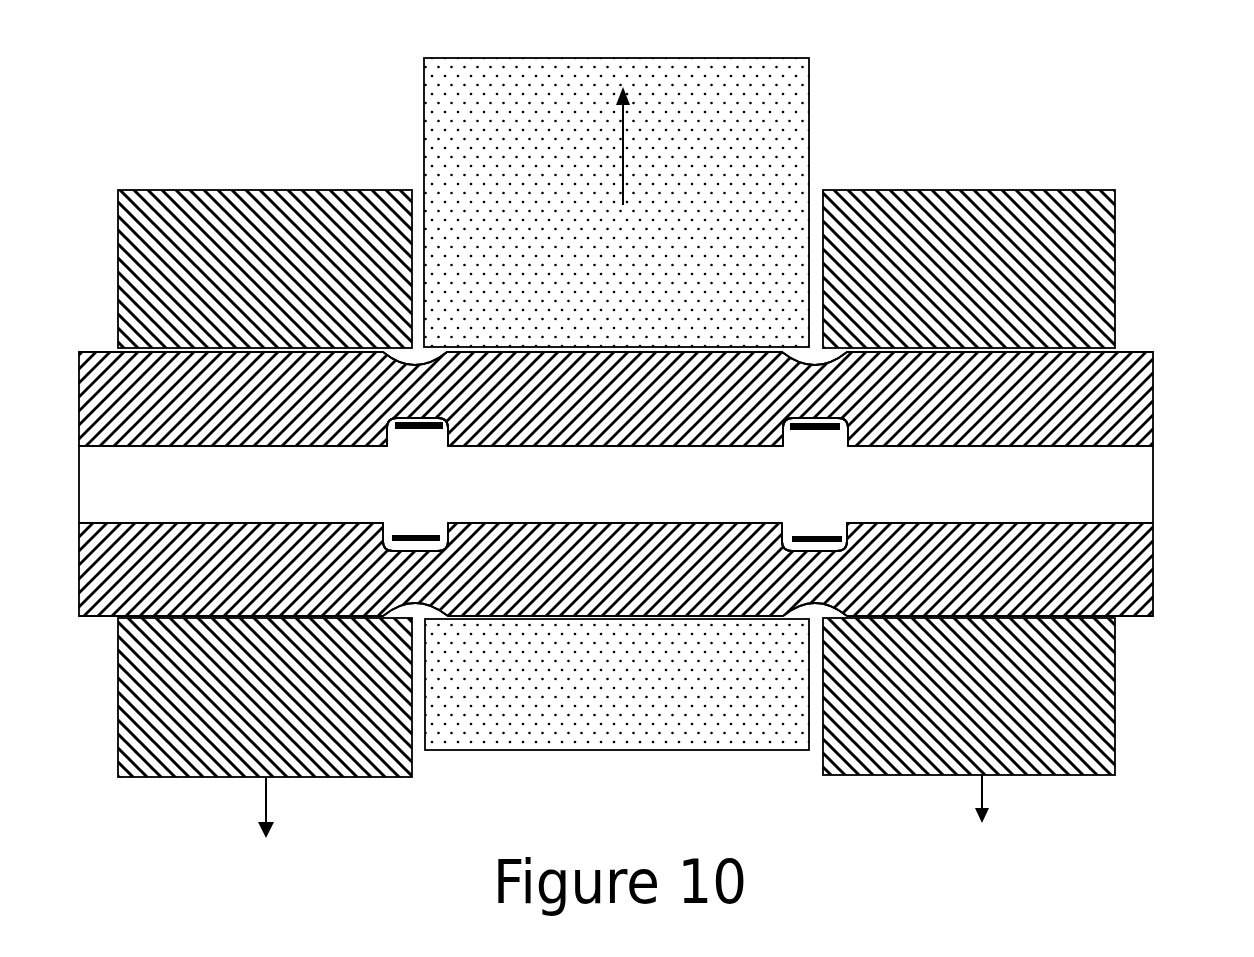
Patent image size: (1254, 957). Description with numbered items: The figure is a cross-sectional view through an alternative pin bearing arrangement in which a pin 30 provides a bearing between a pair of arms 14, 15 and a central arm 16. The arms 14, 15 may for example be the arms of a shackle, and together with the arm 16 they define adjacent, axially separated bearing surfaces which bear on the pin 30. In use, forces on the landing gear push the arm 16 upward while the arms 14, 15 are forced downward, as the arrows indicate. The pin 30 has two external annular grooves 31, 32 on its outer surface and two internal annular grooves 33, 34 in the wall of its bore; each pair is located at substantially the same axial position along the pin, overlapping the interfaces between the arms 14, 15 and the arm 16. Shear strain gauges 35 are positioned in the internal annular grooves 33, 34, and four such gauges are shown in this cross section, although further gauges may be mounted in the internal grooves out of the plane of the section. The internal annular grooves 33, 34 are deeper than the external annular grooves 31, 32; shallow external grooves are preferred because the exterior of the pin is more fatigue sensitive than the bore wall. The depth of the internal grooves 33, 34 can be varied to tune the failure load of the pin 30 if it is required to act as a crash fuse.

The arm 14 is at (258, 190).
The arm 15 is at (958, 190).
The arm 16 is at (623, 58).
The pin 30 is at (1155, 410).
The external annular groove 31 is at (422, 368).
The external annular groove 32 is at (820, 367).
The internal annular groove 33 is at (390, 433).
The internal annular groove 34 is at (790, 440).
The shear strain gauges 35 is at (423, 433).